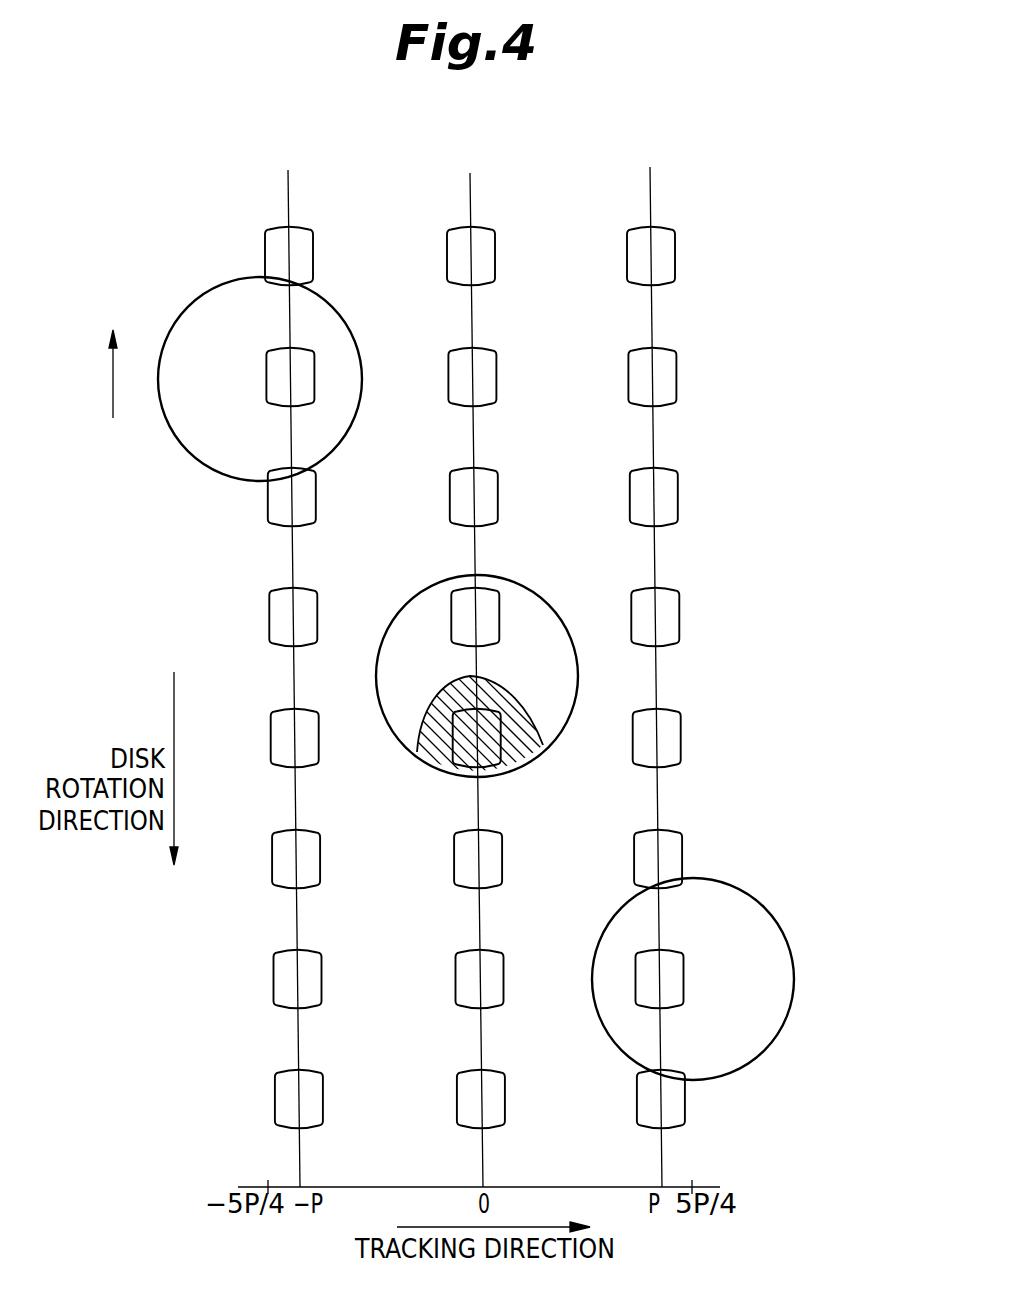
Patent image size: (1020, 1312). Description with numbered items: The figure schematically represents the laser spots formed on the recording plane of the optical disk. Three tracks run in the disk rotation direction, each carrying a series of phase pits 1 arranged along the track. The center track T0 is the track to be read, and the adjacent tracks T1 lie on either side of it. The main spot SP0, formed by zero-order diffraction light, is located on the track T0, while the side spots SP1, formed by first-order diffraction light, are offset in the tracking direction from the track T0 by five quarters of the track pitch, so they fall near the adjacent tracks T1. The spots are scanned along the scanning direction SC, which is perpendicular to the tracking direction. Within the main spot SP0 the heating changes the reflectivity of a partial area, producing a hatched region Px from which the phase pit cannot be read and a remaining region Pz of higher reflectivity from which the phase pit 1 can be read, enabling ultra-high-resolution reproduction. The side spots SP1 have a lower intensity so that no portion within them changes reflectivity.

The phase pit 1 is at (457, 258).
The track T0 is at (468, 659).
The adjacent track T1 is at (469, 659).
The main spot SP0 is at (609, 641).
The side spot SP1 is at (718, 1105).
The readable region Pz is at (533, 600).
The unreadable region Px is at (432, 742).
The scanning direction SC is at (96, 374).